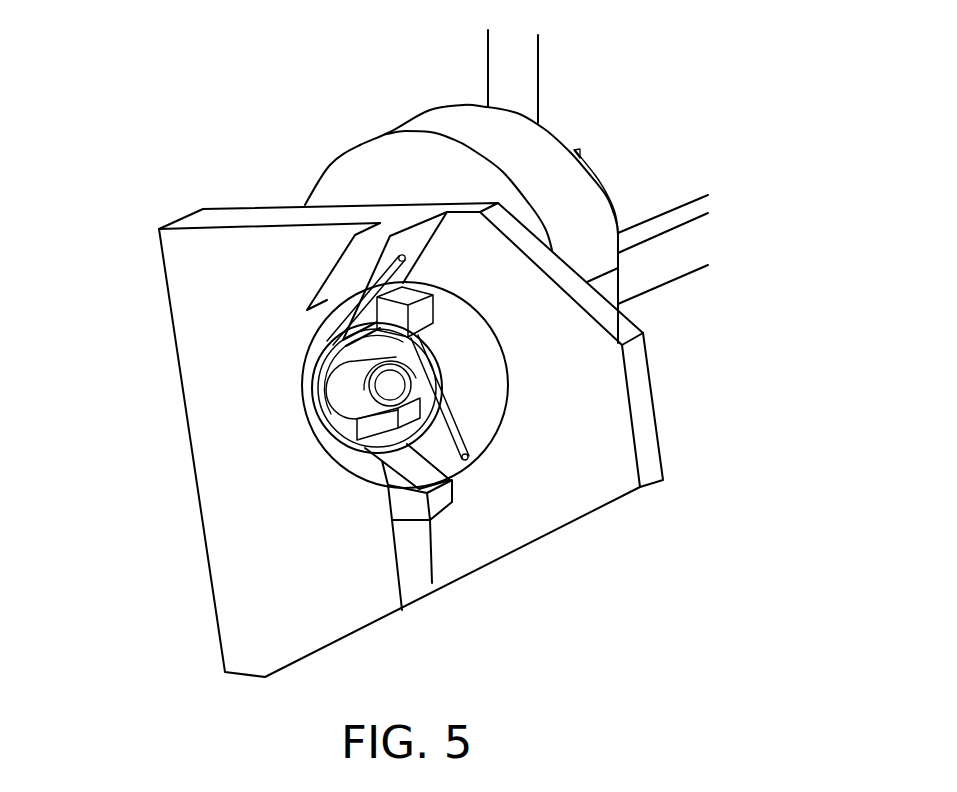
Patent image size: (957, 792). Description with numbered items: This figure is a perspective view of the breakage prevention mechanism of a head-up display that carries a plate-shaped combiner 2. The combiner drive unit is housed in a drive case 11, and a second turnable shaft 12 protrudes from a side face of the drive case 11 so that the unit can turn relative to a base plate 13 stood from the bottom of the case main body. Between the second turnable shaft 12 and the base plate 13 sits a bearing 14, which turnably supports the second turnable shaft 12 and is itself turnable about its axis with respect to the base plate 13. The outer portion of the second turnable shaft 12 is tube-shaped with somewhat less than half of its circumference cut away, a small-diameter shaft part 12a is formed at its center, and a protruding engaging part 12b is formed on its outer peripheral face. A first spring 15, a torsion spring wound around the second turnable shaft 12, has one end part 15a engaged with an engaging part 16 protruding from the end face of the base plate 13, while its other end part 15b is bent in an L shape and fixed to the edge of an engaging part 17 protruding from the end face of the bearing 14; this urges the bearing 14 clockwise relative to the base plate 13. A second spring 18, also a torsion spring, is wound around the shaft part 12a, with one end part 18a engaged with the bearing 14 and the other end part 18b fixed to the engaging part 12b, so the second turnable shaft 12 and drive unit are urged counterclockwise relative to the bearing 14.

The combiner 2 is at (500, 60).
The drive case 11 is at (390, 150).
The second turnable shaft 12 is at (322, 380).
The shaft part 12a is at (360, 412).
The engaging part 12b is at (410, 293).
The base plate 13 is at (190, 291).
The bearing 14 is at (492, 415).
The first spring 15 is at (370, 457).
The one end part 15a is at (360, 253).
The other end part 15b is at (437, 485).
The engaging part 16 is at (343, 257).
The engaging part 17 is at (410, 503).
The second spring 18 is at (462, 381).
The one end part 18a is at (463, 445).
The other end part 18b is at (460, 338).